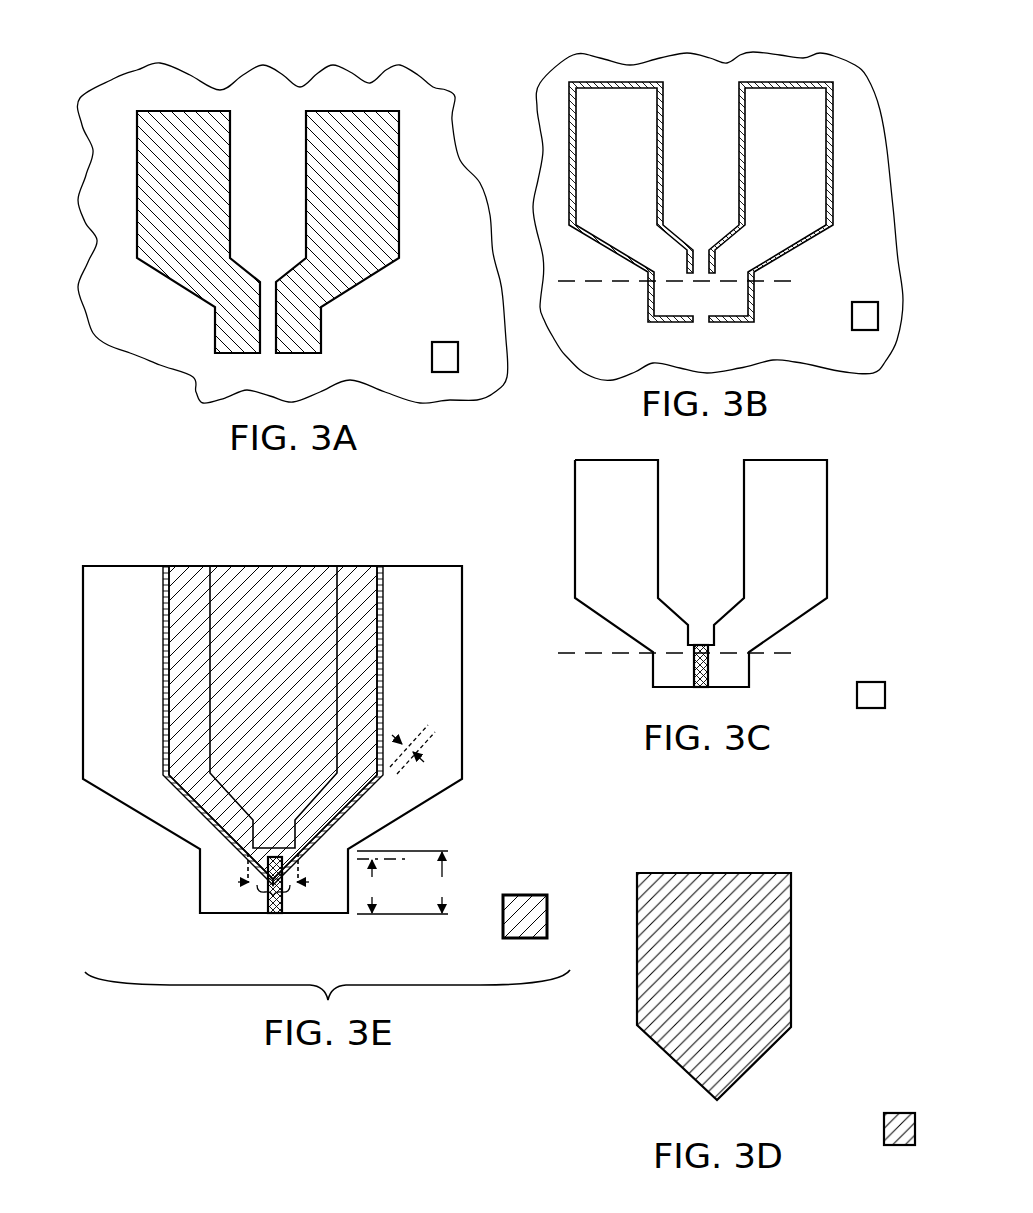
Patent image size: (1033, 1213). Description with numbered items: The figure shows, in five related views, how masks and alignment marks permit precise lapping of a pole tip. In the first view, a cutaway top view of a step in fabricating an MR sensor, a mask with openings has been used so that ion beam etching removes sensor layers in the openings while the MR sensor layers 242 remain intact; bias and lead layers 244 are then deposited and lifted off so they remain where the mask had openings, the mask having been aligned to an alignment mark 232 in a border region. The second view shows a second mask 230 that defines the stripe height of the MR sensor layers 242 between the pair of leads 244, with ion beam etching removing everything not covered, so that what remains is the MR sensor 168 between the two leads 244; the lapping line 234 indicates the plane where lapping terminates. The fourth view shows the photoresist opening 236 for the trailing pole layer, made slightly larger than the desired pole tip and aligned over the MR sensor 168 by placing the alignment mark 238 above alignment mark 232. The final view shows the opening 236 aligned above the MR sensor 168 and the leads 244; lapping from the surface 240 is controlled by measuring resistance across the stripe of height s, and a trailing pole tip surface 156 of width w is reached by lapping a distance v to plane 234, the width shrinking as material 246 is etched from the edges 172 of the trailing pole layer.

In FIG. 3E, the trailing pole tip surface 156 is at (255, 860).
In FIG. 3C, the MR sensor 168 is at (701, 646).
In FIG. 3E, the MR sensor 168 is at (279, 916).
In FIG. 3E, the edges of the trailing pole layer 172 is at (203, 823).
In FIG. 3B, the second mask 230 is at (702, 310).
In FIG. 3C, the second mask 230 is at (701, 573).
In FIG. 3E, the second mask 230 is at (452, 656).
In FIG. 3A, the alignment mark 232 is at (433, 360).
In FIG. 3B, the alignment mark 232 is at (854, 308).
In FIG. 3C, the alignment mark 232 is at (860, 685).
In FIG. 3E, the alignment mark 232 is at (520, 896).
In FIG. 3B, the lapping line 234 is at (618, 292).
In FIG. 3C, the lapping line 234 is at (616, 666).
In FIG. 3E, the lapping line 234 is at (392, 866).
In FIG. 3B, the photoresist opening 236 is at (701, 202).
In FIG. 3D, the photoresist opening 236 is at (744, 1059).
In FIG. 3E, the photoresist opening 236 is at (379, 697).
In FIG. 3D, the alignment mark 238 is at (886, 1127).
In FIG. 3E, the alignment mark 238 is at (273, 722).
In FIG. 3E, the surface 240 is at (212, 916).
In FIG. 3A, the MR sensor layers 242 is at (249, 168).
In FIG. 3B, the MR sensor layers 242 is at (680, 142).
In FIG. 3A, the bias and lead layers 244 is at (245, 268).
In FIG. 3B, the bias and lead layers 244 is at (672, 228).
In FIG. 3C, the bias and lead layers 244 is at (755, 512).
In FIG. 3E, the removed material 246 is at (379, 779).